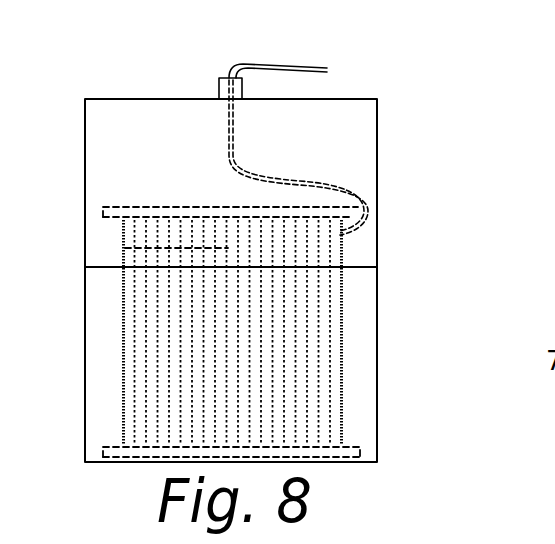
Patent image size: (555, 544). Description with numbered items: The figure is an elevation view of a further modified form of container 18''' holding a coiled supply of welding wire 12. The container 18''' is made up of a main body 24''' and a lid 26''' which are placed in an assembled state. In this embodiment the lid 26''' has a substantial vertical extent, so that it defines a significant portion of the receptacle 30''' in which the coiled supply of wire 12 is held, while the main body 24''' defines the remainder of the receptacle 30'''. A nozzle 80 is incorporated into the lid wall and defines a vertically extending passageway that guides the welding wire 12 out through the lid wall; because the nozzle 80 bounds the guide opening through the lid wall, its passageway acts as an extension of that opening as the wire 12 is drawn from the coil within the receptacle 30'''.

The welding wire 12 is at (272, 66).
The nozzle 80 is at (218, 91).
The lid 26''' is at (347, 151).
The container 18''' is at (261, 280).
The receptacle 30''' is at (289, 326).
The main body 24''' is at (265, 433).